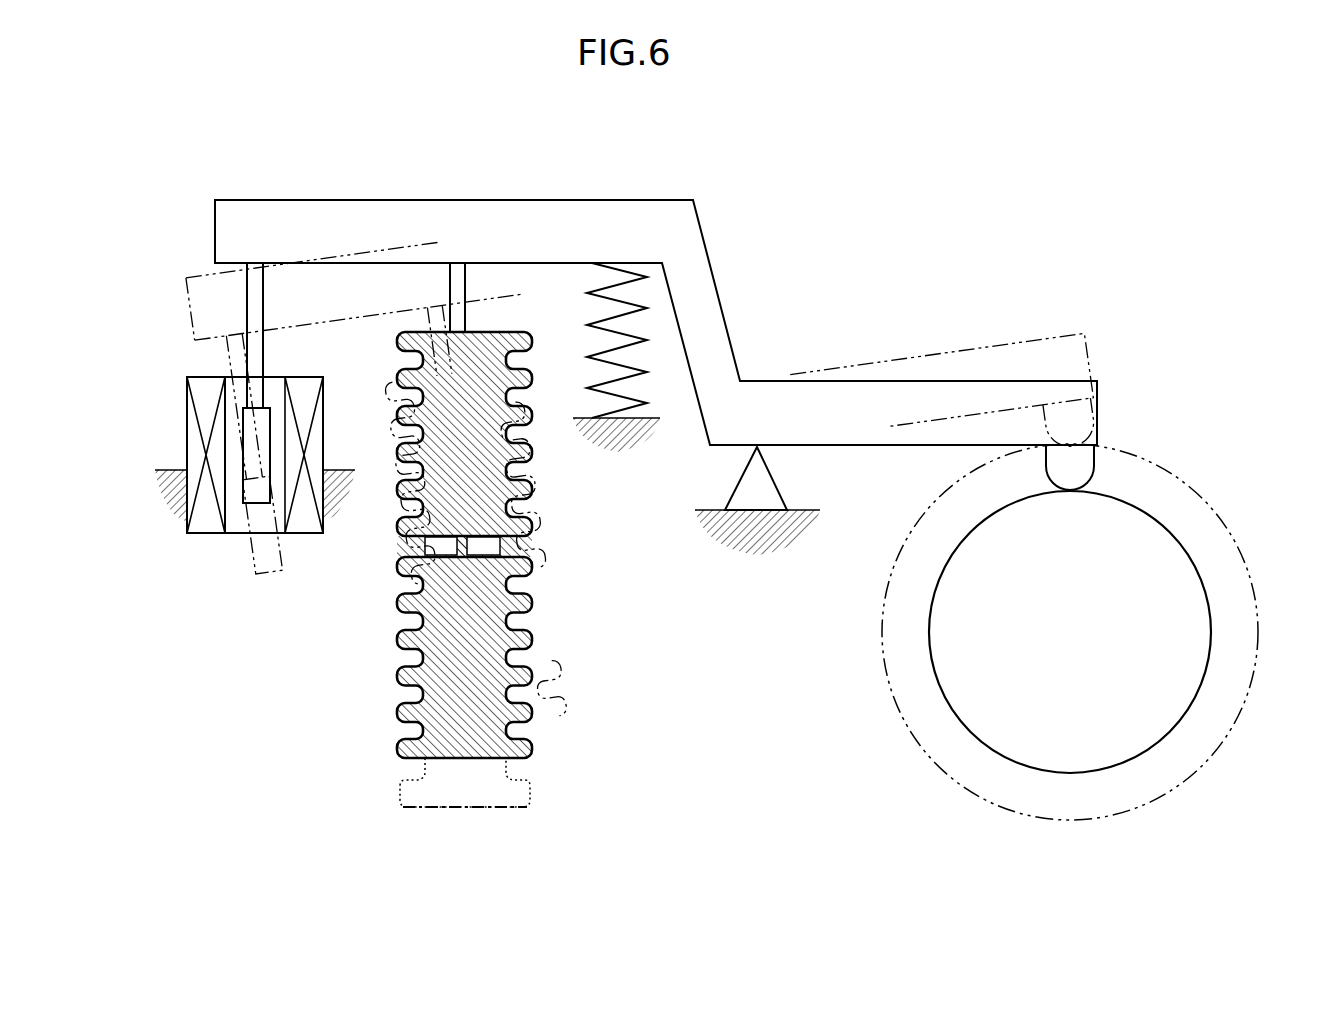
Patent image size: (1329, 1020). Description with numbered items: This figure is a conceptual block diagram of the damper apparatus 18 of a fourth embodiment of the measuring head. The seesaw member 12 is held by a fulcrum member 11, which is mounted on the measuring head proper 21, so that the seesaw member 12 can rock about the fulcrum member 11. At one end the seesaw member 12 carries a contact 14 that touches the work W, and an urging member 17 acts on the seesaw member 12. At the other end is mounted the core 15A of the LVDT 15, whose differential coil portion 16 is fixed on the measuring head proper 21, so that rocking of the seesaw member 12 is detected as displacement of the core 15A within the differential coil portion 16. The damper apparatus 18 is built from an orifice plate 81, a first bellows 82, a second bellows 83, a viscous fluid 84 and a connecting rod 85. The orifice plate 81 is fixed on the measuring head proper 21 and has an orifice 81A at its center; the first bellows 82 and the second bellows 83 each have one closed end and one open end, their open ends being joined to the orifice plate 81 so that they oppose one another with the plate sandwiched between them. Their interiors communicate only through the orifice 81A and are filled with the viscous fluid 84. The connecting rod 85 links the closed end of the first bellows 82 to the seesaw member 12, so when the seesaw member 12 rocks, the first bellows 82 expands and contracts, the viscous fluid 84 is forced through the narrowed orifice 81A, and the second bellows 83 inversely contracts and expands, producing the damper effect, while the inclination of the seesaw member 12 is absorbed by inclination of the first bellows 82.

The seesaw member 12 is at (660, 212).
The connecting rod 85 is at (460, 282).
The LVDT 15 is at (164, 402).
The core 15A is at (253, 457).
The differential coil portion 16 is at (205, 517).
The urging member 17 is at (638, 335).
The fulcrum member 11 is at (770, 491).
The contact 14 is at (1085, 462).
The work W is at (1190, 637).
The damper apparatus 18 is at (432, 632).
The first bellows 82 is at (527, 510).
The orifice plate 81 is at (473, 613).
The orifice 81A is at (463, 558).
The measuring head proper 21 is at (523, 548).
The second bellows 83 is at (535, 757).
The viscous fluid 84 is at (465, 745).